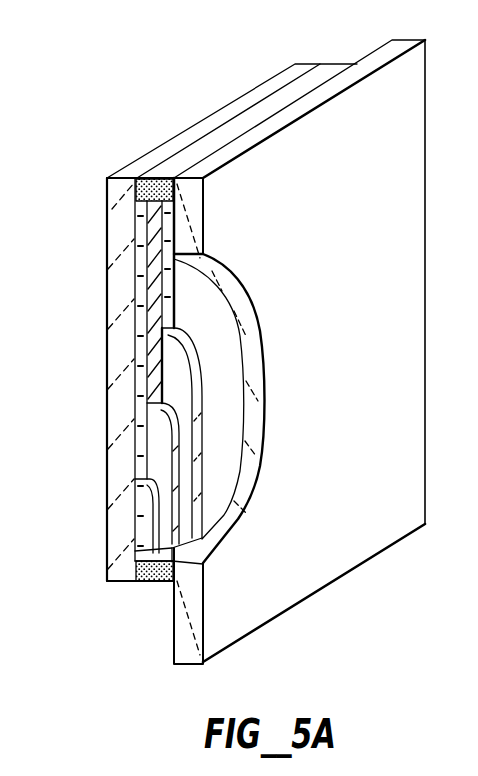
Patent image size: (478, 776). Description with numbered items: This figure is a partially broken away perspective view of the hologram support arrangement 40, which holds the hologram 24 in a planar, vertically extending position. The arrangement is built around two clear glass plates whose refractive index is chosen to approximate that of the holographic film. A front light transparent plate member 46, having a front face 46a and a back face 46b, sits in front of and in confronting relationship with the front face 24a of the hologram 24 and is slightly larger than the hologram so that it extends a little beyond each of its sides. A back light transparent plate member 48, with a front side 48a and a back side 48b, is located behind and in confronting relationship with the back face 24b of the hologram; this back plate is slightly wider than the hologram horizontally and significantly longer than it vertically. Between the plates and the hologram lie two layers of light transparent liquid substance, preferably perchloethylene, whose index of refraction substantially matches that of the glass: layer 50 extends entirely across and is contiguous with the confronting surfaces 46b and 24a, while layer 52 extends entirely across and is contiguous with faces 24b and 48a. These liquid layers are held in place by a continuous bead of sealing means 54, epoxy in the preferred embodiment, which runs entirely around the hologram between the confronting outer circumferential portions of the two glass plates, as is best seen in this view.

The hologram support arrangement 40 is at (116, 63).
The back light transparent plate member 48 is at (291, 596).
The front side of back plate member 48a is at (164, 613).
The back side of back plate member 48b is at (202, 635).
The sealing means 54 is at (144, 170).
The layer of light transparent liquid substance 50 is at (134, 238).
The layer of light transparent liquid substance 52 is at (169, 236).
The hologram 24 is at (129, 369).
The front face of hologram 24a is at (137, 348).
The back face of hologram 24b is at (144, 380).
The front light transparent plate member 46 is at (127, 488).
The front face of front plate member 46a is at (99, 511).
The back face of front plate member 46b is at (131, 525).